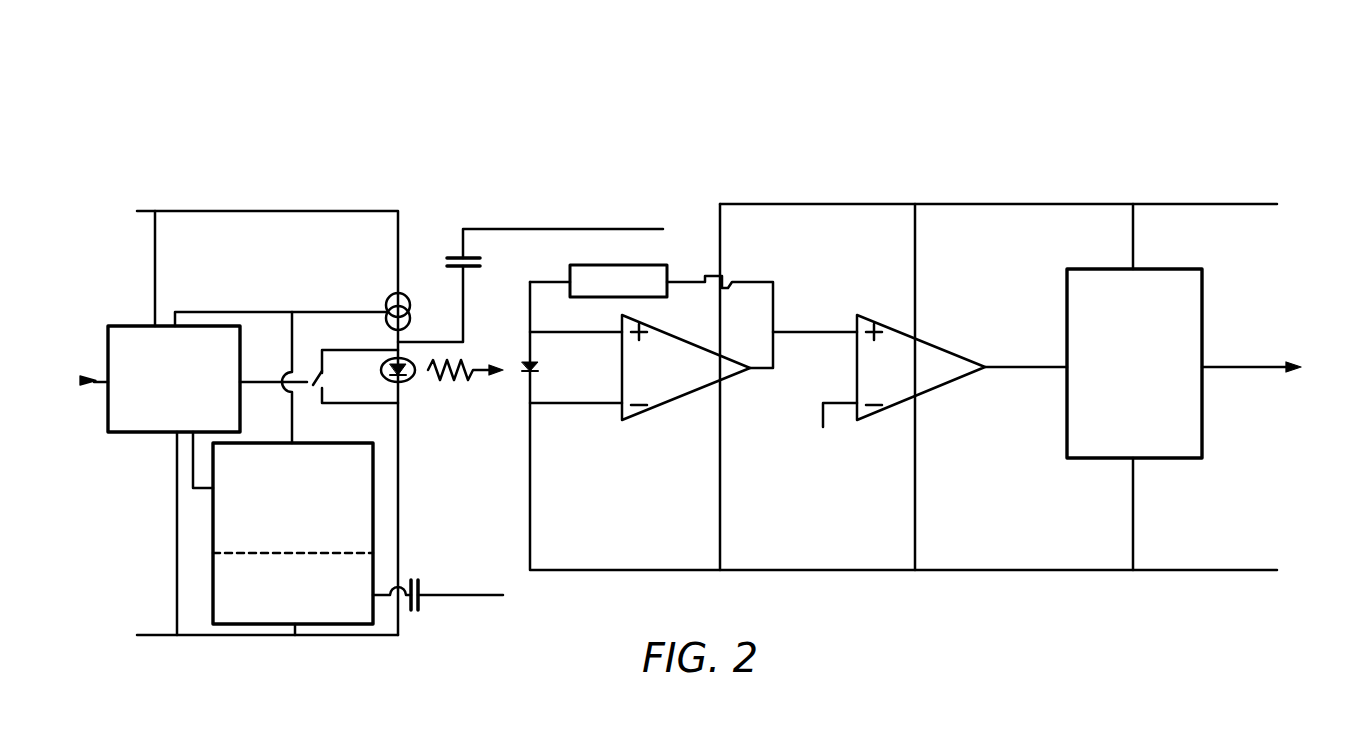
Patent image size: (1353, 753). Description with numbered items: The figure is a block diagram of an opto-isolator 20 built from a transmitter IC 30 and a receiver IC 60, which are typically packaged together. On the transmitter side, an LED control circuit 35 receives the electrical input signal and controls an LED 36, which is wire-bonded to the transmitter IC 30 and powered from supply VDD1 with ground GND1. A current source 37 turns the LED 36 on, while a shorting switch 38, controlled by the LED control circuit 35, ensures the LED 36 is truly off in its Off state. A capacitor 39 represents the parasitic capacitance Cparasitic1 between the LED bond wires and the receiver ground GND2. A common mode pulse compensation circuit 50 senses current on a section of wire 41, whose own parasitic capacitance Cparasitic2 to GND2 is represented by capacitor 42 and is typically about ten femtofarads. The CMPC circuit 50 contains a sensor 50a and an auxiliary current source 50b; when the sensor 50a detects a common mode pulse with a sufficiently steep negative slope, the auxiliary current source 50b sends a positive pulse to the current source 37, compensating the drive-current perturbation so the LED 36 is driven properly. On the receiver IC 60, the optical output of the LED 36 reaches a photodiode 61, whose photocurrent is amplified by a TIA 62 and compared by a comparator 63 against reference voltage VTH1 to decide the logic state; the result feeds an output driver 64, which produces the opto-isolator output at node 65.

The opto-isolator 20 is at (300, 136).
The transmitter IC 30 is at (420, 213).
The LED control circuit 35 is at (133, 325).
The LED 36 is at (406, 380).
The current source 37 is at (408, 297).
The shorting switch 38 is at (315, 378).
The capacitor 39 is at (456, 252).
The wire 41 is at (392, 598).
The capacitor 42 is at (422, 579).
The common mode pulse compensation circuit 50 is at (293, 533).
The sensor 50a is at (213, 517).
The auxiliary current source 50b is at (213, 585).
The receiver IC 60 is at (505, 428).
The photodiode 61 is at (537, 372).
The TIA 62 is at (650, 408).
The comparator 63 is at (935, 392).
The output driver 64 is at (1091, 460).
The node 65 is at (1240, 368).